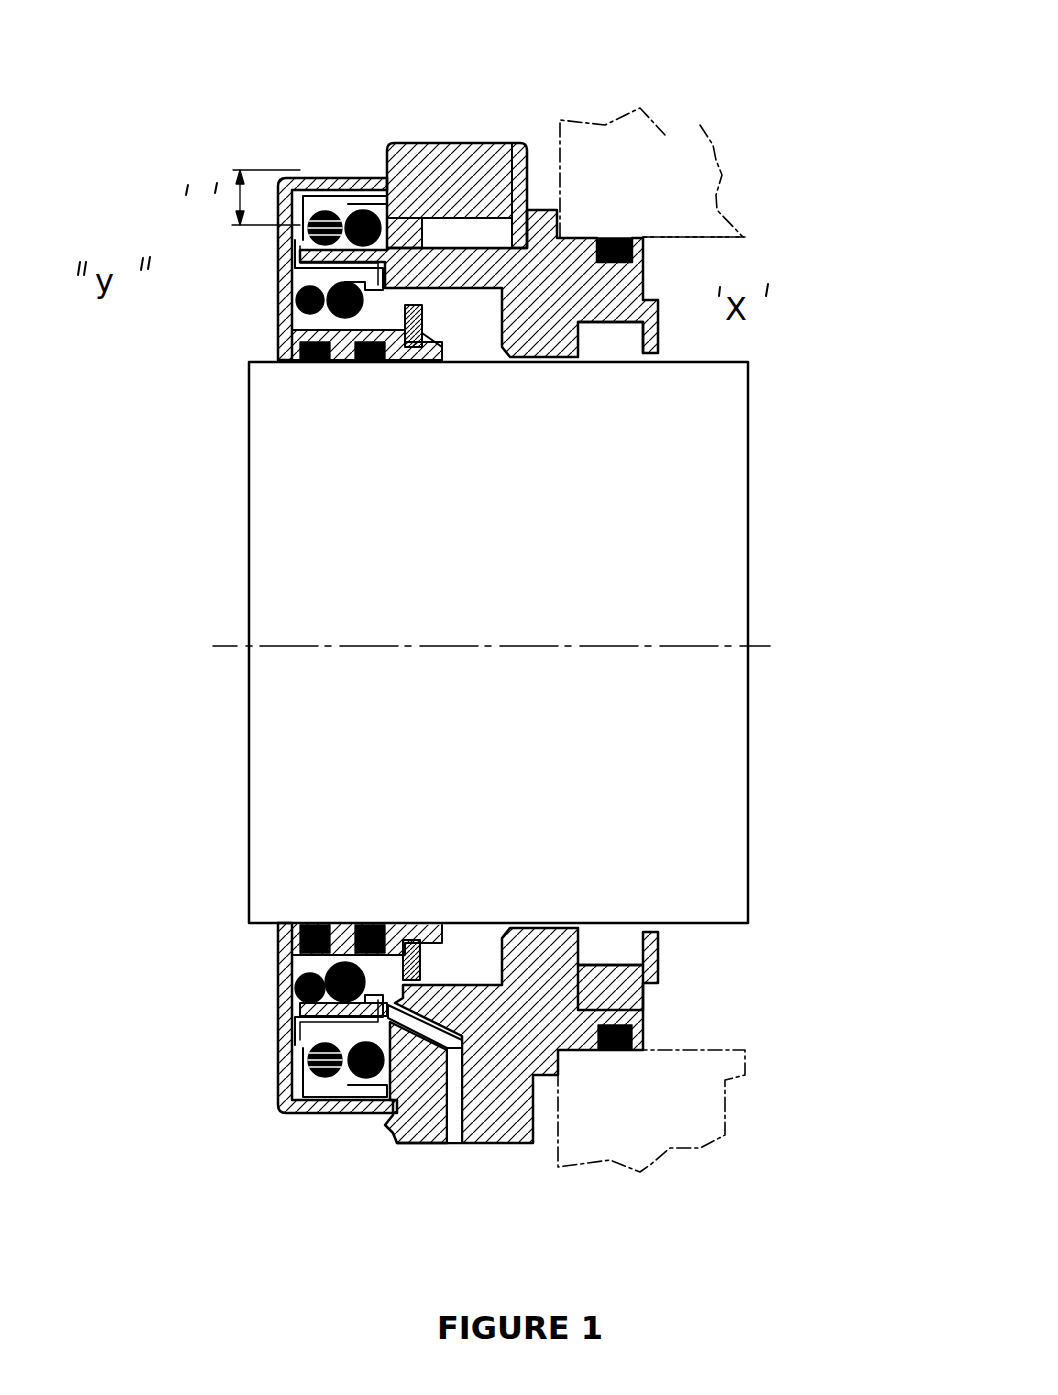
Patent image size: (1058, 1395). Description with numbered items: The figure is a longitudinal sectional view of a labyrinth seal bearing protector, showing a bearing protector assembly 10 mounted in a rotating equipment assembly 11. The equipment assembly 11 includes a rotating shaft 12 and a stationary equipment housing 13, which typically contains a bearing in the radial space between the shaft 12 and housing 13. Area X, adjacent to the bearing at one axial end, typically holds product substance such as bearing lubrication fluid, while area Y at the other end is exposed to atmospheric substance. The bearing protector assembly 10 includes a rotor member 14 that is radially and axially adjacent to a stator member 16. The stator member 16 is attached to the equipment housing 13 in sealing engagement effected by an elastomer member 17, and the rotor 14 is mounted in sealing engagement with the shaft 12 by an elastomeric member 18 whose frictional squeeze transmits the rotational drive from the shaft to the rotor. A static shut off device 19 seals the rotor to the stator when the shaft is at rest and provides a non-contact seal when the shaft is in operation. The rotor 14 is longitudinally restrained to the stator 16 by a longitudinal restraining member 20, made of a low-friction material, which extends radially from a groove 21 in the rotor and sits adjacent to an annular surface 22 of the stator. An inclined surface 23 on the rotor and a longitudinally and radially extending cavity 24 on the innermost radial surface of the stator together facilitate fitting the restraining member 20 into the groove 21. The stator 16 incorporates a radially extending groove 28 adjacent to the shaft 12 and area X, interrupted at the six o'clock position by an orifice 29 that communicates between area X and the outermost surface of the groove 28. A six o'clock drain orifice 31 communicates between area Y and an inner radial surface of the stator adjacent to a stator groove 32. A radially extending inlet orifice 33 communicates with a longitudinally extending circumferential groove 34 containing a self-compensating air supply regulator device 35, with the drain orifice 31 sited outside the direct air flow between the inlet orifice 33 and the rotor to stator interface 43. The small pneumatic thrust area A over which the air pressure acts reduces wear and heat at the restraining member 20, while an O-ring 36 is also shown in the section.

The bearing protector assembly 10 is at (210, 158).
The rotating equipment assembly 11 is at (797, 248).
The rotating shaft 12 is at (732, 505).
The stationary equipment housing 13 is at (667, 153).
The rotor member 14 is at (277, 323).
The stator member 16 is at (538, 205).
The elastomer member 17 is at (612, 1050).
The elastomeric member 18 is at (313, 923).
The static shut off device 19 is at (280, 1007).
The longitudinal restraining member 20 is at (470, 988).
The groove 21 is at (412, 965).
The annular surface 22 is at (392, 960).
The inclined surface 23 is at (425, 990).
The cavity 24 is at (410, 992).
The radially extending groove 28 is at (612, 347).
The orifice 29 is at (628, 992).
The drain orifice 31 is at (455, 1150).
The stator groove 32 is at (390, 278).
The radially extending orifice 33 is at (490, 160).
The longitudinally extending circumferential groove 34 is at (412, 222).
The self-compensating air supply regulator device 35 is at (357, 180).
The O-ring 36 is at (370, 205).
The rotor to stator interface 43 is at (373, 1110).